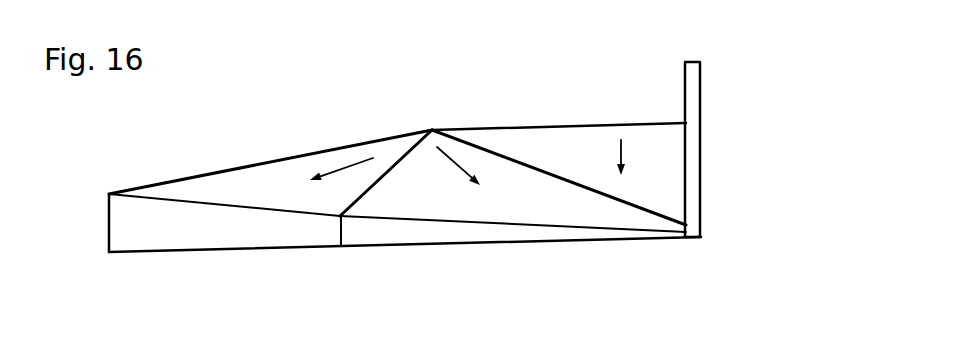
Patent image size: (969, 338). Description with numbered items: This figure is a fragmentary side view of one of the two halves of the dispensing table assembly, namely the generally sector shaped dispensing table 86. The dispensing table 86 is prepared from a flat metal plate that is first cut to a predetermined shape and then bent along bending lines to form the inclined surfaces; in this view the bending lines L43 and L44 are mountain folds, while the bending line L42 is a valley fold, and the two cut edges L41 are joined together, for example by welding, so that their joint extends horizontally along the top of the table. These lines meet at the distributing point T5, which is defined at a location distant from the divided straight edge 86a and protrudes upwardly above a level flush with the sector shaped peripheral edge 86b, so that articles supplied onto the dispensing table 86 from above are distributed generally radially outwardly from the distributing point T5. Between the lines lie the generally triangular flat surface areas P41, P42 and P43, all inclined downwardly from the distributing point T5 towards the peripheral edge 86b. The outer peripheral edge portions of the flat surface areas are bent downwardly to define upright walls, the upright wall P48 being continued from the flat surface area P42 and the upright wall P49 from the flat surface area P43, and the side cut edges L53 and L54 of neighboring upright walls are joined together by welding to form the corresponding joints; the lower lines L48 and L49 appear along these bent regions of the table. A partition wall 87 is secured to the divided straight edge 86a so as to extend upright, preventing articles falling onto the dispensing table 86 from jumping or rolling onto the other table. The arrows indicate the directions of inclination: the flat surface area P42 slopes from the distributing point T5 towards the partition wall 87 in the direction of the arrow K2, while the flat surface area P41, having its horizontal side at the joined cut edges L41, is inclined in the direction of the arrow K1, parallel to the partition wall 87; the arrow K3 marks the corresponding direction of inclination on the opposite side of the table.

The dispensing table 86 is at (291, 94).
The divided straight edge 86a is at (685, 145).
The sector shaped peripheral edge 86b is at (142, 252).
The partition wall 87 is at (692, 97).
The distributing point T5 is at (428, 127).
The flat surface area P41 is at (510, 148).
The flat surface area P42 is at (485, 207).
The flat surface area P43 is at (270, 168).
The upright wall P48 is at (378, 237).
The upright wall P49 is at (218, 238).
The cut edge L41 is at (560, 122).
The bending line L42 is at (570, 185).
The bending line L43 is at (383, 178).
The bending line L44 is at (215, 170).
The lower inner line L48 is at (445, 223).
The left inner line L49 is at (193, 202).
The side cut edge L53 is at (335, 238).
The side cut edge L54 is at (107, 213).
The arrow K1 is at (604, 157).
The arrow K2 is at (476, 171).
The direction K3 is at (341, 178).